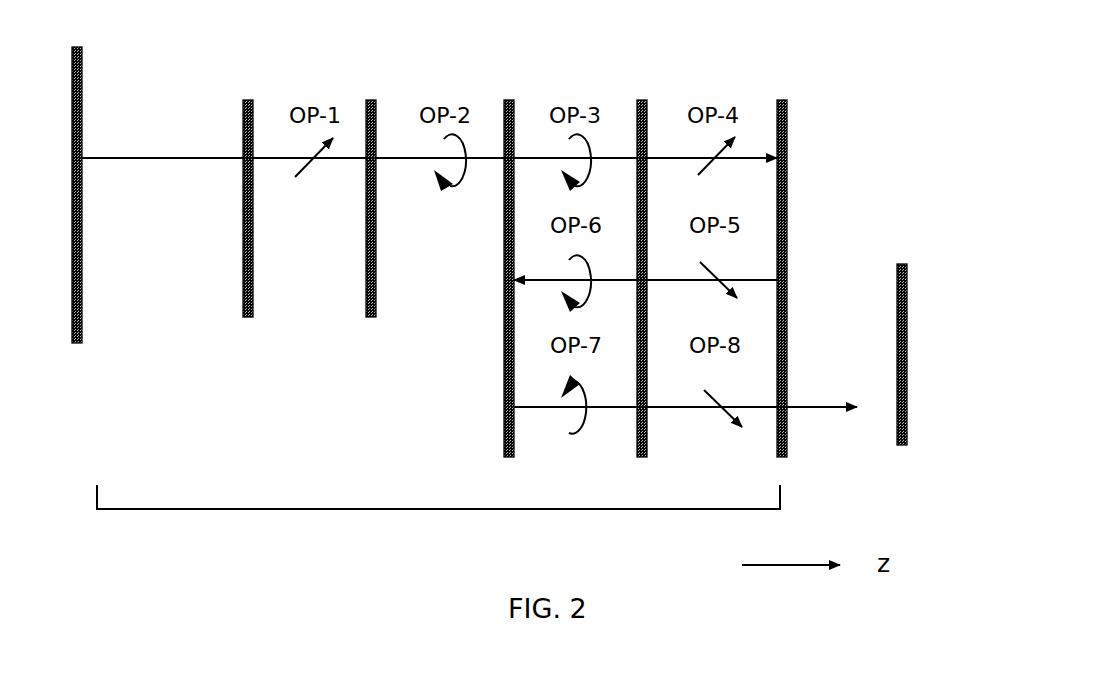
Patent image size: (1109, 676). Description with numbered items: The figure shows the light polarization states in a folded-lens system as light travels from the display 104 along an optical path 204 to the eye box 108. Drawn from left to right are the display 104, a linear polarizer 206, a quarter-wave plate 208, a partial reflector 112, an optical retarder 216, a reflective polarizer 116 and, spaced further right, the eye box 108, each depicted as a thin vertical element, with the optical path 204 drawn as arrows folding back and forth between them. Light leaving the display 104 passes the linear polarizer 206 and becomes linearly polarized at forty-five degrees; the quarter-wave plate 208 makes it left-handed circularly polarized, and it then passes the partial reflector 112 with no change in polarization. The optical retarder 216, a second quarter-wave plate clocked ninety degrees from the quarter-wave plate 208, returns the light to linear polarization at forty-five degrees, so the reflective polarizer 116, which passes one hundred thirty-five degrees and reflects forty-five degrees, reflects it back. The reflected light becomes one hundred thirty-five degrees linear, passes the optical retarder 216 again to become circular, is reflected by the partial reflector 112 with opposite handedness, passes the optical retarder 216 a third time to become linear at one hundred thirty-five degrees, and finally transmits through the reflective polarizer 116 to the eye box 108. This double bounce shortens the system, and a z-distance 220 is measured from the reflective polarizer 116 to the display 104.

The display 104 is at (82, 47).
The linear polarizer 206 is at (253, 100).
The quarter-wave plate (QWP) 208 is at (376, 100).
The partial reflector 112 is at (514, 100).
The optical retarder 216 is at (647, 100).
The reflective polarizer 116 is at (787, 100).
The eye box 108 is at (907, 312).
The optical path 204 is at (226, 158).
The z-distance 220 is at (150, 510).